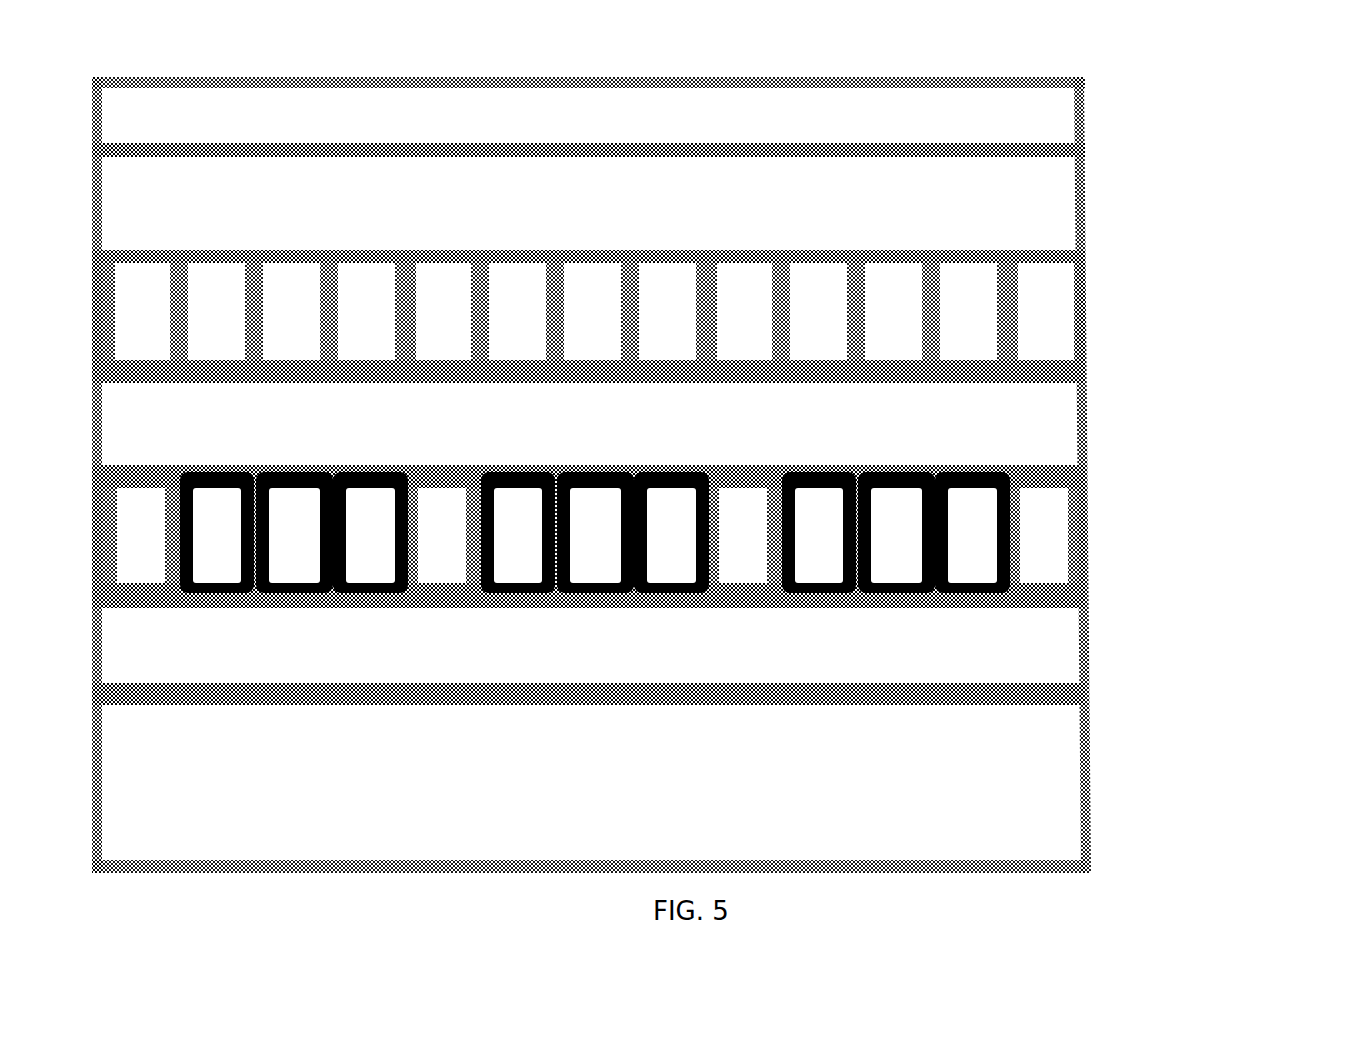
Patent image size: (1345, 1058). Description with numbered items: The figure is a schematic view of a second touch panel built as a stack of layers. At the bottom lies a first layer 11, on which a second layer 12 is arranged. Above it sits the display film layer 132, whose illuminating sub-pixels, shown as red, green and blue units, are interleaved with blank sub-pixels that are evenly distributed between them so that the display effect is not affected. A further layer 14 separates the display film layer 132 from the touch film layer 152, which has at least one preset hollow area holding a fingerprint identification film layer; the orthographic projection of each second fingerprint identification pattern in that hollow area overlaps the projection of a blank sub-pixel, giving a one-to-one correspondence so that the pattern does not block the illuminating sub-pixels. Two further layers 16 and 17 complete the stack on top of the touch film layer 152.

The substrate 11 is at (1067, 792).
The driving circuit layer 12 is at (1067, 657).
The display film layer 132 is at (1077, 533).
The encapsulation layer 14 is at (1077, 420).
The touch film layer 152 is at (1077, 315).
The polarizer layer 16 is at (1068, 195).
The cover plate 17 is at (1053, 125).